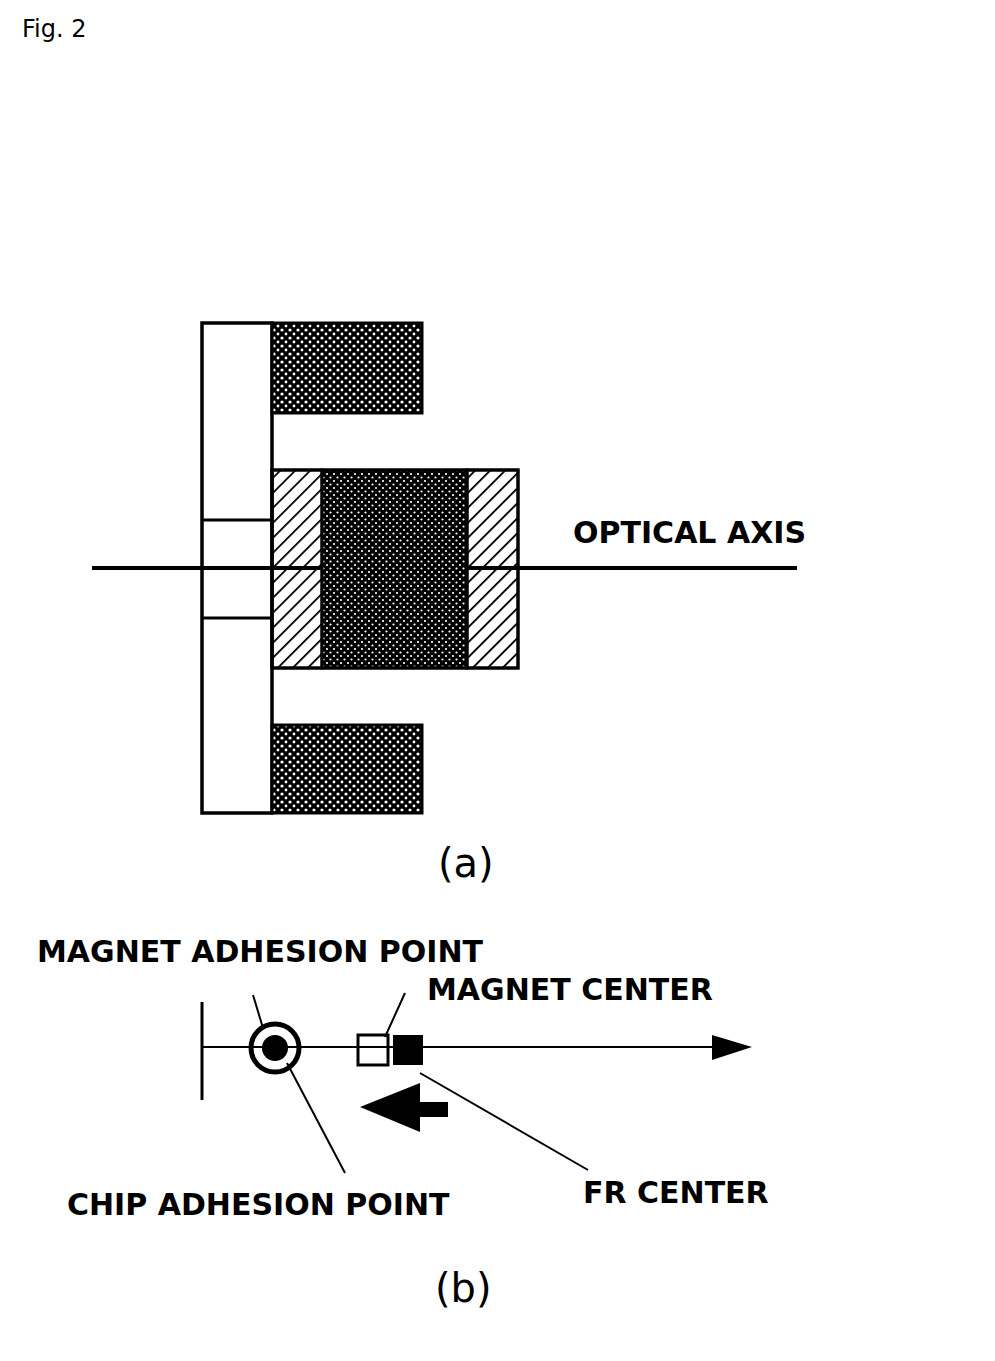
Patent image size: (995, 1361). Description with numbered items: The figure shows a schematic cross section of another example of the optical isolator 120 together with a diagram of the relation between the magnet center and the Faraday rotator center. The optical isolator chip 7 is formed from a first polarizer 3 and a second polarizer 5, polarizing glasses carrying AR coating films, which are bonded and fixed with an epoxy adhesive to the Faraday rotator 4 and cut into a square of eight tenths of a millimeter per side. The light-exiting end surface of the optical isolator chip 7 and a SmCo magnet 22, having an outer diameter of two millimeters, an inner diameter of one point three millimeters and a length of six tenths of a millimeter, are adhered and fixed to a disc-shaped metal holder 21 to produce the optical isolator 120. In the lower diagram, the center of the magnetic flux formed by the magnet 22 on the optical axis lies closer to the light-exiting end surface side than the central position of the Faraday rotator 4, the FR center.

The optical isolator 120 is at (395, 362).
The first polarizer 3 is at (291, 470).
The Faraday rotator 4 is at (411, 470).
The second polarizer 5 is at (497, 470).
The optical isolator chip 7 is at (473, 373).
The metal holder 21 is at (222, 323).
The SmCo magnet 22 is at (422, 740).